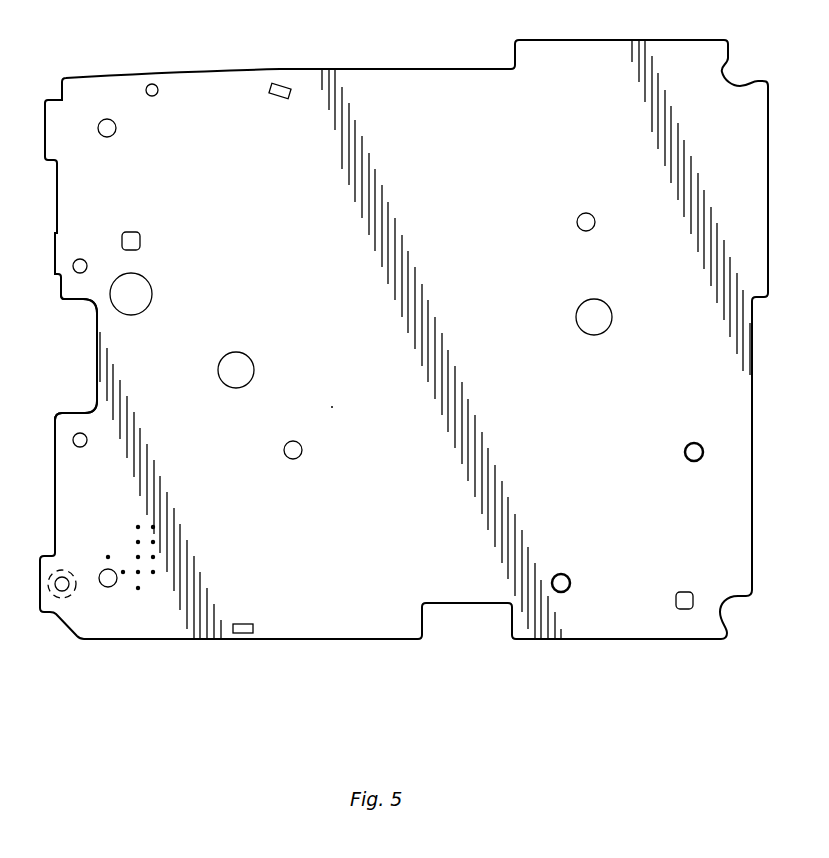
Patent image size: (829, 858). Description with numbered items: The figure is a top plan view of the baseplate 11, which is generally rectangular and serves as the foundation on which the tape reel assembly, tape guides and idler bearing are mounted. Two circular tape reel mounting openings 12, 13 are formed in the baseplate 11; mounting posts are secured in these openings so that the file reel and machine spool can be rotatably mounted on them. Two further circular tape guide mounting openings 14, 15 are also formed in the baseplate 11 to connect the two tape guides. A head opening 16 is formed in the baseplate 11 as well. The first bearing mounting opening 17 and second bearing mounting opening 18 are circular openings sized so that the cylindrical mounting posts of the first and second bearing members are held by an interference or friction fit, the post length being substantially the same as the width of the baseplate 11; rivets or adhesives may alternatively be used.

The baseplate 11 is at (508, 168).
The tape reel mounting opening 12 is at (586, 214).
The tape reel mounting opening 13 is at (296, 457).
The tape guide mounting opening 14 is at (108, 132).
The tape guide mounting opening 15 is at (107, 587).
The head opening 16 is at (97, 381).
The first bearing mounting opening 17 is at (703, 459).
The second bearing mounting opening 18 is at (560, 592).